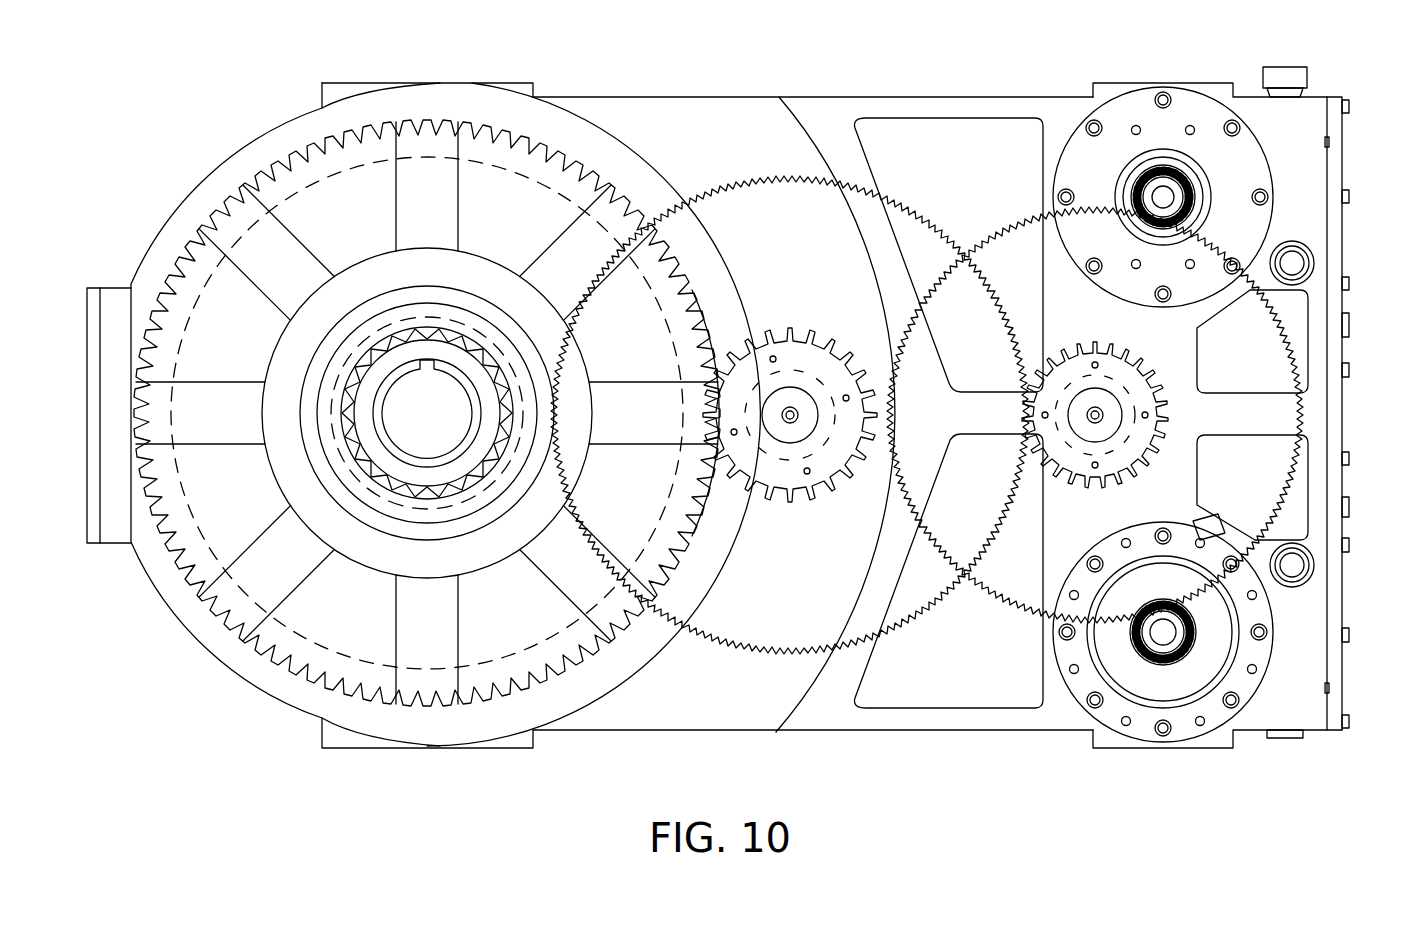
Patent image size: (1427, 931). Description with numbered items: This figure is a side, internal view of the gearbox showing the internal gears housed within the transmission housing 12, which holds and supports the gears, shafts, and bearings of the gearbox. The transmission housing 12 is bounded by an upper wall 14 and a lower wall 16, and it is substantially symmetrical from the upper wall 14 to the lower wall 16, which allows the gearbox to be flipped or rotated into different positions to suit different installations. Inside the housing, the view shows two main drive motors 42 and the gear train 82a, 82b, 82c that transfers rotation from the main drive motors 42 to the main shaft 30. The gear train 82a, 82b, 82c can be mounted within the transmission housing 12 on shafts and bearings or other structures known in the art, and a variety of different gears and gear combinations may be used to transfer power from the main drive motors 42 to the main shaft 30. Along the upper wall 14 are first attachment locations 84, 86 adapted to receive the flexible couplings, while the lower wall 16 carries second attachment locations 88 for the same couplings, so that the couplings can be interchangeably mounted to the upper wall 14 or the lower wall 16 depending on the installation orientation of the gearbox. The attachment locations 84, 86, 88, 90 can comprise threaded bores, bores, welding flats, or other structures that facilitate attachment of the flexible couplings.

The transmission housing 12 is at (710, 120).
The upper wall 14 is at (960, 97).
The lower wall 16 is at (593, 735).
The main shaft 30 is at (427, 407).
The main drive motor 42 is at (1255, 178).
The gear train 82a is at (1267, 365).
The gear train 82b is at (917, 578).
The gear train 82c is at (495, 680).
The first attachment location 84 is at (440, 81).
The first attachment location 86 is at (1183, 82).
The second attachment location 88 is at (383, 750).
The attachment location 90 is at (1185, 752).